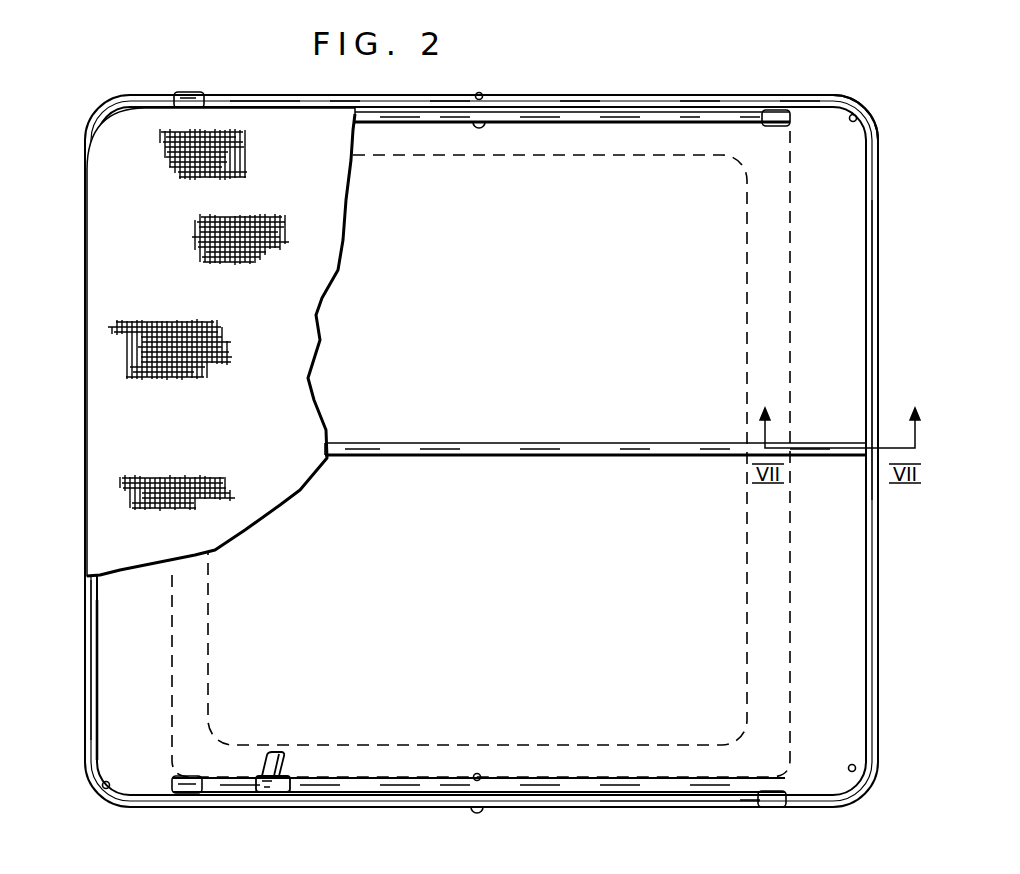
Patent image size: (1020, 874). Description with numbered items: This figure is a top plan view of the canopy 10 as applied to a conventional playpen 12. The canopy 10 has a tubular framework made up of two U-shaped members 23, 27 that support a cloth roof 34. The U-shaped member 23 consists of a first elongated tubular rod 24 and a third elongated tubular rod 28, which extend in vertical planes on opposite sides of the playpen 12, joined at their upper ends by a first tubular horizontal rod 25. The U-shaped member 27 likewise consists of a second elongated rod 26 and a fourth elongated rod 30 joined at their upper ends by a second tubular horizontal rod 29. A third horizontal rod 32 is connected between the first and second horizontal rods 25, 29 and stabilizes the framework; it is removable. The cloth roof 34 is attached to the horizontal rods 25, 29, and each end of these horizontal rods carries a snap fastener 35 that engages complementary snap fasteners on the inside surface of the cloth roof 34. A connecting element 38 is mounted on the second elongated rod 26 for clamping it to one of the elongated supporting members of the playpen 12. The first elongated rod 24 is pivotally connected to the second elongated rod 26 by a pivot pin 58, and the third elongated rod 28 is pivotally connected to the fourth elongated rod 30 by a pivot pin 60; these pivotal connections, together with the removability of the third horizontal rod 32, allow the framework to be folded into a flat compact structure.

The canopy 10 is at (708, 78).
The playpen 12 is at (785, 354).
The U-shaped member 23 is at (862, 97).
The first elongated tubular rod 24 is at (650, 795).
The first tubular horizontal rod 25 is at (877, 262).
The second tubular elongated rod 26 is at (222, 793).
The U-shaped member 27 is at (73, 641).
The third elongated tubular rod 28 is at (586, 100).
The second tubular horizontal rod 29 is at (88, 667).
The fourth tubular elongated rod 30 is at (645, 122).
The third horizontal rod 32 is at (568, 443).
The cloth roof 34 is at (127, 131).
The snap fastener 35 is at (851, 113).
The connecting element 38 is at (265, 741).
The pivot pin 58 is at (480, 806).
The pivot pin 60 is at (481, 92).